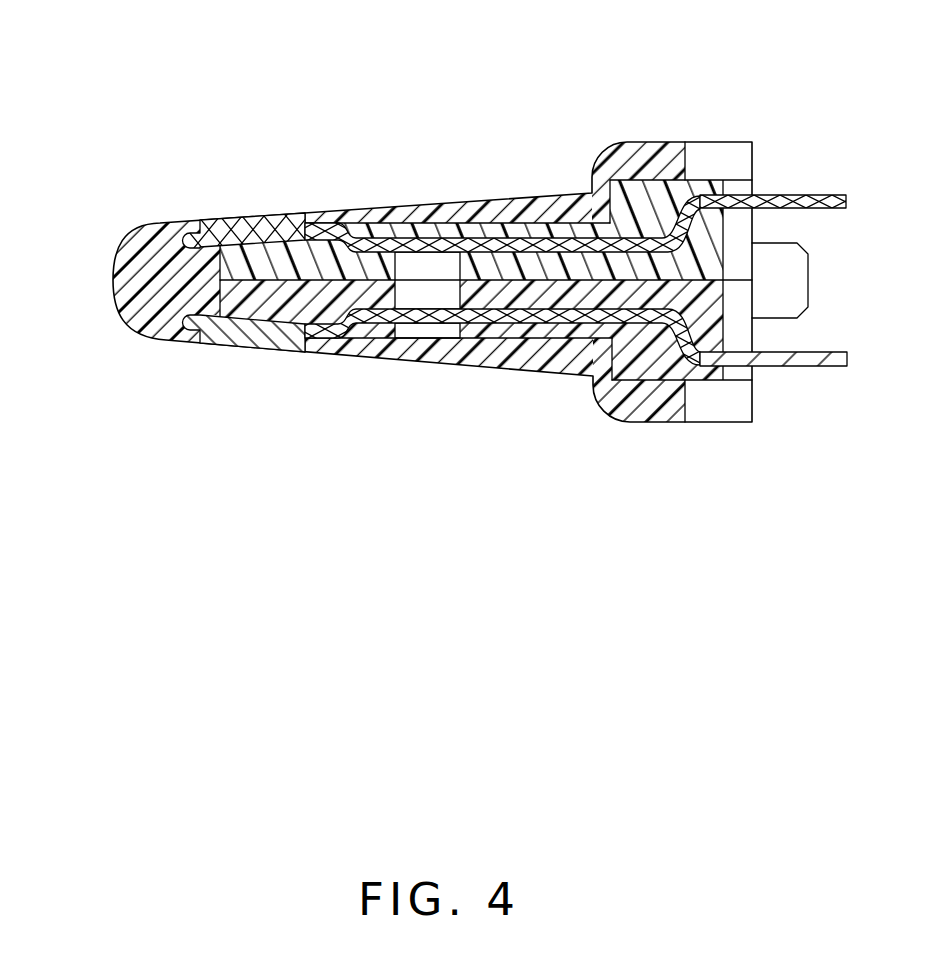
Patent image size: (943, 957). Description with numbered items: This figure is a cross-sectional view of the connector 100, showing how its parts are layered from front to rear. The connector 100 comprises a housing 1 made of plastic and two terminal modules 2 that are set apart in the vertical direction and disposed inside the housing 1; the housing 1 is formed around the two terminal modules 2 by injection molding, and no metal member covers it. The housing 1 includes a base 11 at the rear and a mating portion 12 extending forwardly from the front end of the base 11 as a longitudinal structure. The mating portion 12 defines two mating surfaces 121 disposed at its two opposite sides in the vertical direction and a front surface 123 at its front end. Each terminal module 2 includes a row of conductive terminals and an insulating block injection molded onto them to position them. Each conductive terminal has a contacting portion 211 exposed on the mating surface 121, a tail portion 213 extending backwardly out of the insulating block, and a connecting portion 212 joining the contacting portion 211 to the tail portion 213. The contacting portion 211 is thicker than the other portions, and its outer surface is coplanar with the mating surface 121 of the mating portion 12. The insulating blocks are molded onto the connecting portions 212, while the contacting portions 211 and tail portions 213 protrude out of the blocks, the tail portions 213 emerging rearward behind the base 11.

The connector 100 is at (440, 89).
The housing 1 is at (718, 400).
The base 11 is at (668, 402).
The mating portion 12 is at (496, 356).
The mating surface 121 is at (384, 206).
The front surface 123 is at (112, 276).
The terminal module 2 is at (727, 203).
The contacting portion 211 is at (237, 222).
The connecting portion 212 is at (534, 205).
The tail portion 213 is at (815, 197).